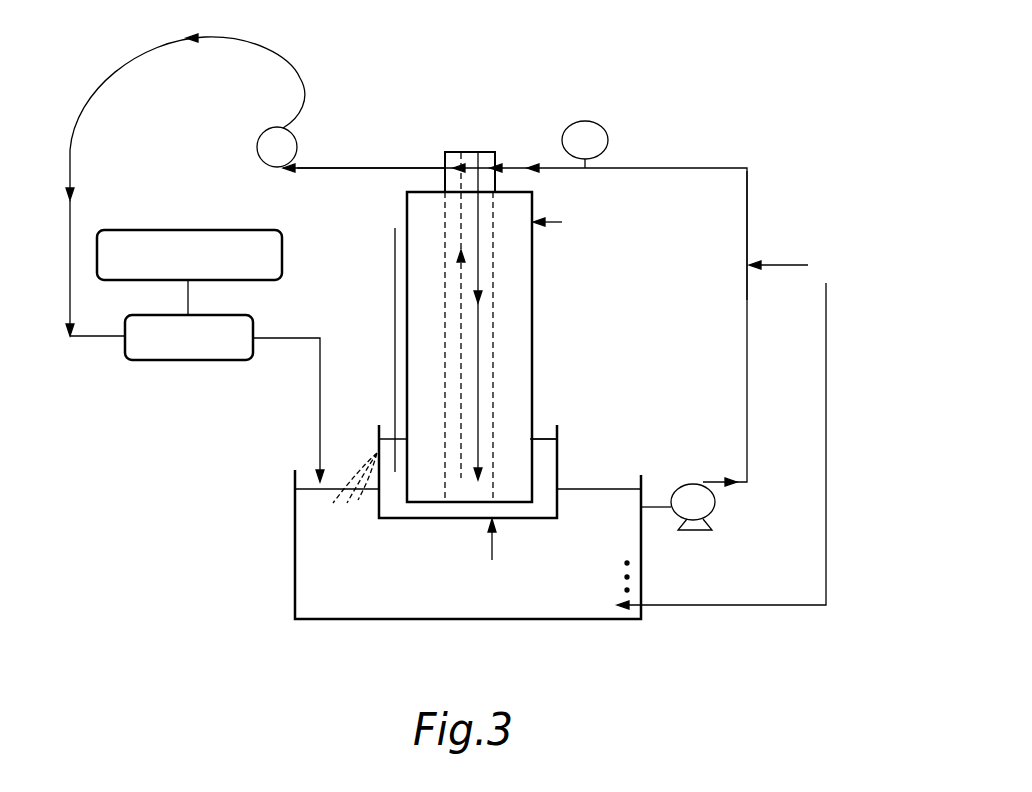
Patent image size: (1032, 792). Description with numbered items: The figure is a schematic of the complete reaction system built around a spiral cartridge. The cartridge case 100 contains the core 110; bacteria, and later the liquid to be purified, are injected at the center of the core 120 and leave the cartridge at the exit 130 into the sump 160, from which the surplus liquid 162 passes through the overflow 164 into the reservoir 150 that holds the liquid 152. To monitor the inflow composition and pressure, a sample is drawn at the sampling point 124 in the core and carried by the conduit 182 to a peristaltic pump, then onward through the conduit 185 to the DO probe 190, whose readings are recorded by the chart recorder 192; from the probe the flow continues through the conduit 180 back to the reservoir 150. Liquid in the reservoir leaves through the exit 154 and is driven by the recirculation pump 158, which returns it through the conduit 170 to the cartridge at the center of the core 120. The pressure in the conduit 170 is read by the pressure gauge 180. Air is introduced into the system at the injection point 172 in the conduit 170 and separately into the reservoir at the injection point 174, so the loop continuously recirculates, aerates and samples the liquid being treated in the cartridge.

The cartridge case 100 is at (532, 333).
The core 110 is at (493, 287).
The center of the core 120 is at (480, 163).
The sampling point in the core 124 is at (445, 163).
The exit 130 is at (398, 300).
The reservoir 150 is at (573, 622).
The liquid 152 is at (498, 598).
The exit 154 is at (643, 500).
The recirculation pump 158 is at (717, 503).
The sump 160 is at (557, 475).
The surplus liquid 162 is at (543, 463).
The overflow 164 is at (377, 452).
The conduit 170 is at (748, 192).
The air injection point 172 is at (748, 262).
The air injection point 174 is at (640, 605).
The pressure gauge / conduit 180 is at (307, 338).
The conduit 182 is at (367, 167).
The conduit 185 is at (243, 39).
The DO probe 190 is at (252, 317).
The chart recorder 192 is at (283, 245).